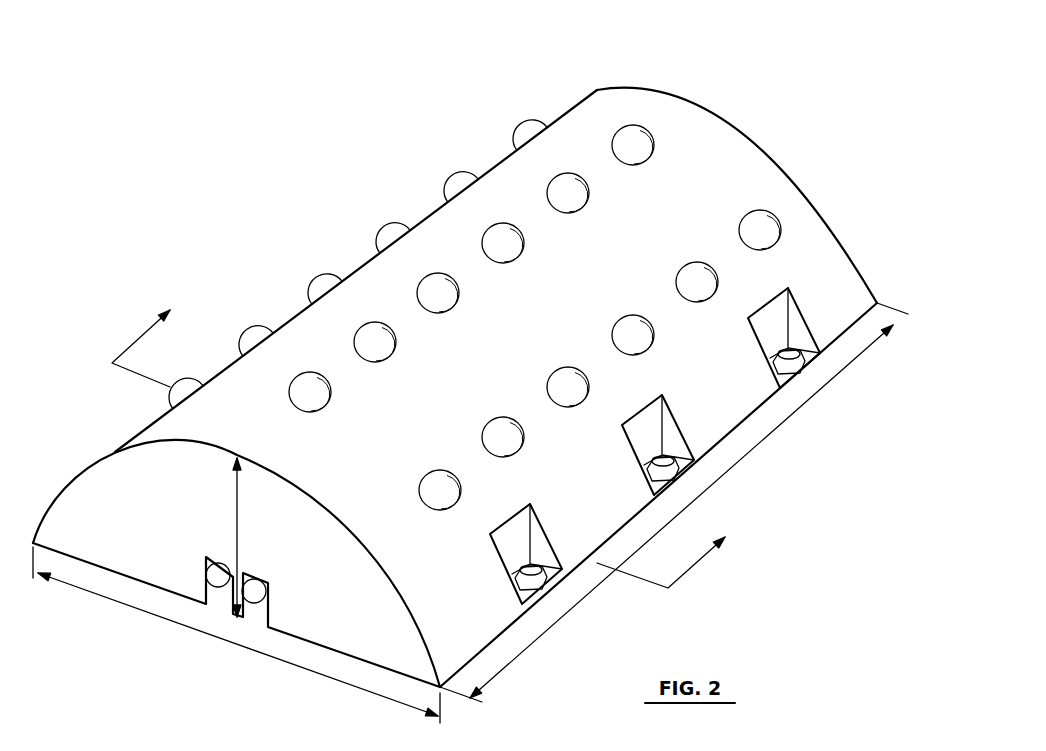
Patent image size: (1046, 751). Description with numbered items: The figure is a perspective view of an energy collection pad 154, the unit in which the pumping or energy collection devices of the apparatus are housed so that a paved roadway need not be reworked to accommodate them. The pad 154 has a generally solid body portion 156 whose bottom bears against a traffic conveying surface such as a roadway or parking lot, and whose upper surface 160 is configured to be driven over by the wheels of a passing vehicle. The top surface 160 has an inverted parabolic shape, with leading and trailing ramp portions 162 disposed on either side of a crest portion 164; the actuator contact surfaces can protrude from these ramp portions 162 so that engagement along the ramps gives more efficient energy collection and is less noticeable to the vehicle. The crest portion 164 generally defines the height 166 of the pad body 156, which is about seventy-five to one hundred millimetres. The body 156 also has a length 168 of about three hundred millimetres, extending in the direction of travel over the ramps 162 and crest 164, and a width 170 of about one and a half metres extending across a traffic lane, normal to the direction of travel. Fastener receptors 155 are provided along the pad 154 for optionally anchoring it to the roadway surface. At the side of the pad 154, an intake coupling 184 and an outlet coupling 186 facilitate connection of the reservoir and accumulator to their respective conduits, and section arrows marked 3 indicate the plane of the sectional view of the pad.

The energy collection pad 154 is at (459, 350).
The fastener receptors 155 is at (793, 290).
The body portion 156 is at (553, 307).
The upper surface 160 is at (315, 388).
The ramp portions 162 is at (433, 565).
The crest portion 164 is at (240, 452).
The height 166 is at (236, 512).
The length 168 is at (243, 646).
The width 170 is at (745, 450).
The intake coupling 184 is at (206, 578).
The outlet coupling 186 is at (266, 593).
The section line for FIG. 3 is at (428, 437).